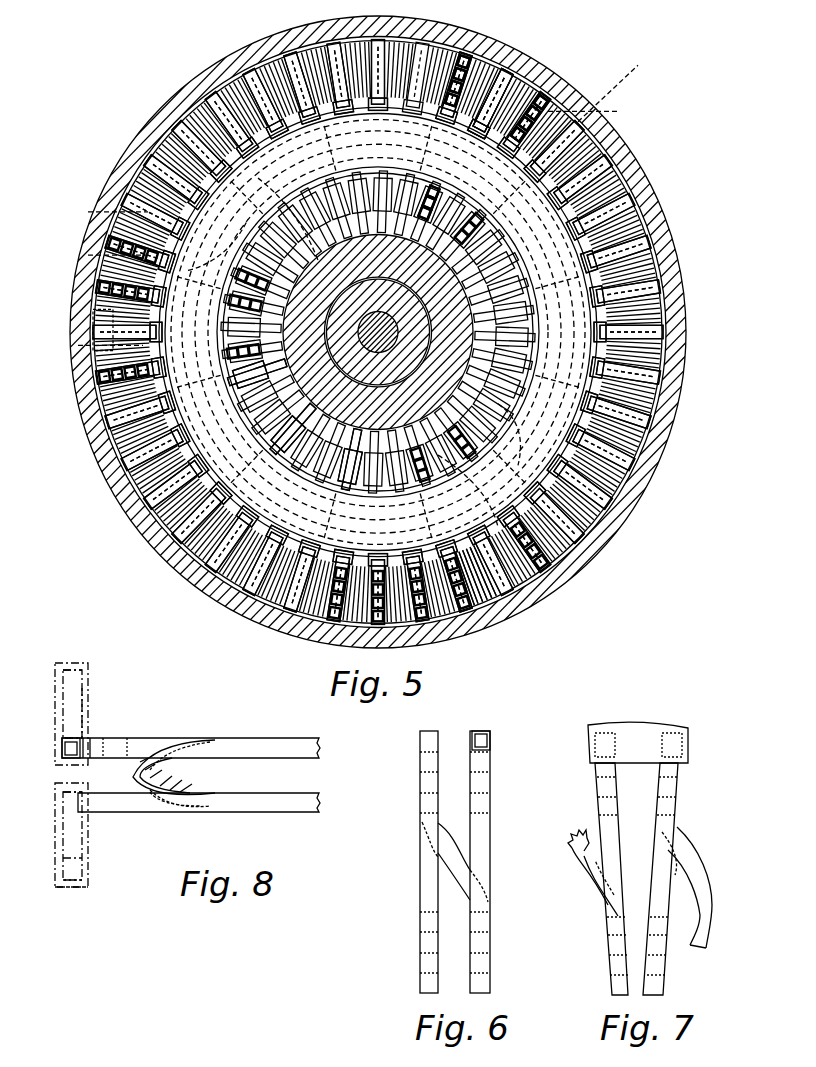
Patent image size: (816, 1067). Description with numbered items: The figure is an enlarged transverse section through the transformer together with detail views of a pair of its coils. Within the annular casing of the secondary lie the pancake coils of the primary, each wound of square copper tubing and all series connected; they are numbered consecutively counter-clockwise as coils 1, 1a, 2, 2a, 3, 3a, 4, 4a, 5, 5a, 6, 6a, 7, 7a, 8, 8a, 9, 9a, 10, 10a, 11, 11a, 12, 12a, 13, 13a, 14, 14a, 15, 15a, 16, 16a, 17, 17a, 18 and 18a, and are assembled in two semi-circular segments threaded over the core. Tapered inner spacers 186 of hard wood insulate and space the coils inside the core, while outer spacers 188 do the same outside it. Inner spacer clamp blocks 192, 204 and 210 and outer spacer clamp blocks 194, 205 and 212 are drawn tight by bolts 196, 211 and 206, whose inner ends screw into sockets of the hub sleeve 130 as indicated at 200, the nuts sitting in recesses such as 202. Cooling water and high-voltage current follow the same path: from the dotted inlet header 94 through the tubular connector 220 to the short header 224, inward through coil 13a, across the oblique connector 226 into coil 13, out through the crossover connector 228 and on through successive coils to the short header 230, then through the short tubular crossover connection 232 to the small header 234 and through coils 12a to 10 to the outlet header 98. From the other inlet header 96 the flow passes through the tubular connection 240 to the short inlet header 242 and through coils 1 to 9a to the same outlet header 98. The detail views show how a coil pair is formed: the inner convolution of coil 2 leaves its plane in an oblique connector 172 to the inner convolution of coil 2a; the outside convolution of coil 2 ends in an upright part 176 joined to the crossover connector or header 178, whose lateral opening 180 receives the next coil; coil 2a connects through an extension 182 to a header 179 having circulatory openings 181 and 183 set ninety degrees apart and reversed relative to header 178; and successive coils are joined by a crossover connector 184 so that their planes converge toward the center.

In FIG. 5, the primary pancake coil 1 is at (100, 378).
In FIG. 5, the primary pancake coil 1a is at (105, 425).
In FIG. 5, the primary pancake coil 2 is at (120, 470).
In FIG. 8, the primary pancake coil 2 is at (233, 740).
In FIG. 6, the primary pancake coil 2 is at (424, 878).
In FIG. 5, the primary pancake coil 2a is at (140, 520).
In FIG. 8, the primary pancake coil 2a is at (233, 812).
In FIG. 6, the primary pancake coil 2a is at (485, 857).
In FIG. 7, the primary pancake coil 2a is at (665, 860).
In FIG. 5, the primary pancake coil 3 is at (170, 565).
In FIG. 7, the primary pancake coil 3 is at (607, 830).
In FIG. 5, the primary pancake coil 3a is at (215, 590).
In FIG. 5, the primary pancake coil 4 is at (242, 600).
In FIG. 5, the primary pancake coil 4a is at (283, 605).
In FIG. 5, the primary pancake coil 5 is at (345, 605).
In FIG. 5, the primary pancake coil 5a is at (385, 605).
In FIG. 5, the primary pancake coil 6 is at (440, 605).
In FIG. 5, the primary pancake coil 6a is at (475, 605).
In FIG. 5, the primary pancake coil 7 is at (560, 555).
In FIG. 5, the primary pancake coil 7a is at (618, 530).
In FIG. 5, the primary pancake coil 8 is at (640, 480).
In FIG. 5, the primary pancake coil 8a is at (670, 440).
In FIG. 5, the primary pancake coil 9 is at (677, 405).
In FIG. 5, the primary pancake coil 9a is at (690, 360).
In FIG. 5, the primary pancake coil 10 is at (683, 312).
In FIG. 5, the primary pancake coil 10a is at (683, 275).
In FIG. 5, the primary pancake coil 11 is at (652, 218).
In FIG. 5, the primary pancake coil 11a is at (647, 182).
In FIG. 5, the primary pancake coil 12 is at (612, 150).
In FIG. 5, the primary pancake coil 12a is at (590, 115).
In FIG. 5, the primary pancake coil 13 is at (495, 60).
In FIG. 5, the primary pancake coil 13a is at (455, 60).
In FIG. 5, the primary pancake coil 14 is at (395, 55).
In FIG. 5, the primary pancake coil 14a is at (345, 60).
In FIG. 5, the primary pancake coil 15 is at (310, 55).
In FIG. 5, the primary pancake coil 15a is at (255, 70).
In FIG. 5, the primary pancake coil 16 is at (205, 95).
In FIG. 5, the primary pancake coil 16a is at (182, 125).
In FIG. 5, the primary pancake coil 17 is at (150, 160).
In FIG. 5, the primary pancake coil 17a is at (115, 195).
In FIG. 5, the primary pancake coil 18 is at (90, 240).
In FIG. 5, the primary pancake coil 18a is at (90, 276).
In FIG. 5, the box or header 94 is at (378, 332).
In FIG. 5, the box or header 96 is at (352, 439).
In FIG. 5, the outlet header 98 is at (393, 332).
In FIG. 5, the hub sleeve 130 is at (395, 332).
In FIG. 5, the tapered inner spacer 186 is at (520, 405).
In FIG. 5, the outer spacer 188 is at (600, 505).
In FIG. 5, the spacer clamp block 192 is at (443, 202).
In FIG. 5, the outer spacer clamp block 194 is at (548, 95).
In FIG. 5, the bolt 196 is at (531, 98).
In FIG. 5, the socket 200 is at (415, 266).
In FIG. 5, the recess 202 is at (570, 110).
In FIG. 5, the spacer clamp block 204 is at (490, 470).
In FIG. 5, the outer spacer clamp block 205 is at (545, 575).
In FIG. 5, the bolt 206 is at (520, 610).
In FIG. 5, the spacer clamp block 210 is at (215, 330).
In FIG. 5, the bolt 211 is at (75, 325).
In FIG. 5, the outer spacer clamp block 212 is at (80, 345).
In FIG. 5, the tubular connector 220 is at (288, 215).
In FIG. 5, the short header 224 is at (85, 255).
In FIG. 5, the oblique connector 226 is at (221, 244).
In FIG. 5, the crossover connector 228 is at (90, 212).
In FIG. 5, the short header 230 is at (525, 45).
In FIG. 5, the short tubular crossover connection 232 is at (476, 86).
In FIG. 5, the small header 234 is at (622, 108).
In FIG. 5, the tubular connection 240 is at (308, 414).
In FIG. 5, the short inlet header 242 is at (282, 365).
In FIG. 8, the oblique connector 172 is at (170, 775).
In FIG. 6, the oblique connector 172 is at (452, 848).
In FIG. 8, the upright part 176 is at (62, 755).
In FIG. 8, the crossover connector or header 178 is at (88, 717).
In FIG. 8, the header 179 is at (88, 855).
In FIG. 8, the lateral opening 180 is at (90, 672).
In FIG. 8, the circulatory opening 181 is at (70, 890).
In FIG. 8, the extension 182 is at (163, 812).
In FIG. 8, the circulatory opening 183 is at (85, 788).
In FIG. 7, the crossover connector 184 is at (645, 728).